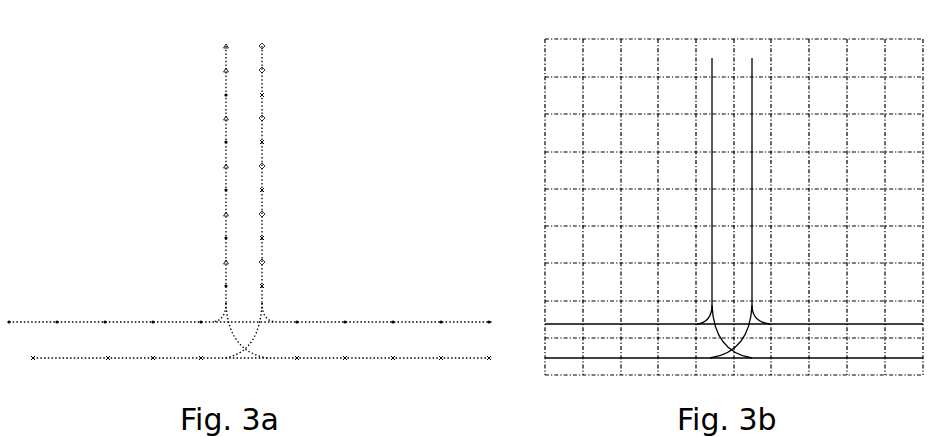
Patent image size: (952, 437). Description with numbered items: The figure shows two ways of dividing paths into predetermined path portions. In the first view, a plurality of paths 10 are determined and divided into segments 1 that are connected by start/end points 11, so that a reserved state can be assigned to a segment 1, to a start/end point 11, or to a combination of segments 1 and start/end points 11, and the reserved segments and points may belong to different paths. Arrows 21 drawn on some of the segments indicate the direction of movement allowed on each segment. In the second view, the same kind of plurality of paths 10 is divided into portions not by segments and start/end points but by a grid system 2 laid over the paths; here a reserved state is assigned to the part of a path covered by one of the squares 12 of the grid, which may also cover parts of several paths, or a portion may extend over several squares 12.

In FIG. 3a, the segment 1 is at (198, 200).
In FIG. 3b, the grid system 2 is at (526, 88).
In FIG. 3a, the path 10 is at (108, 358).
In FIG. 3b, the path 10 is at (622, 358).
In FIG. 3a, the start/end point 11 is at (226, 142).
In FIG. 3b, the square 12 is at (707, 171).
In FIG. 3a, the arrow 21 is at (226, 222).